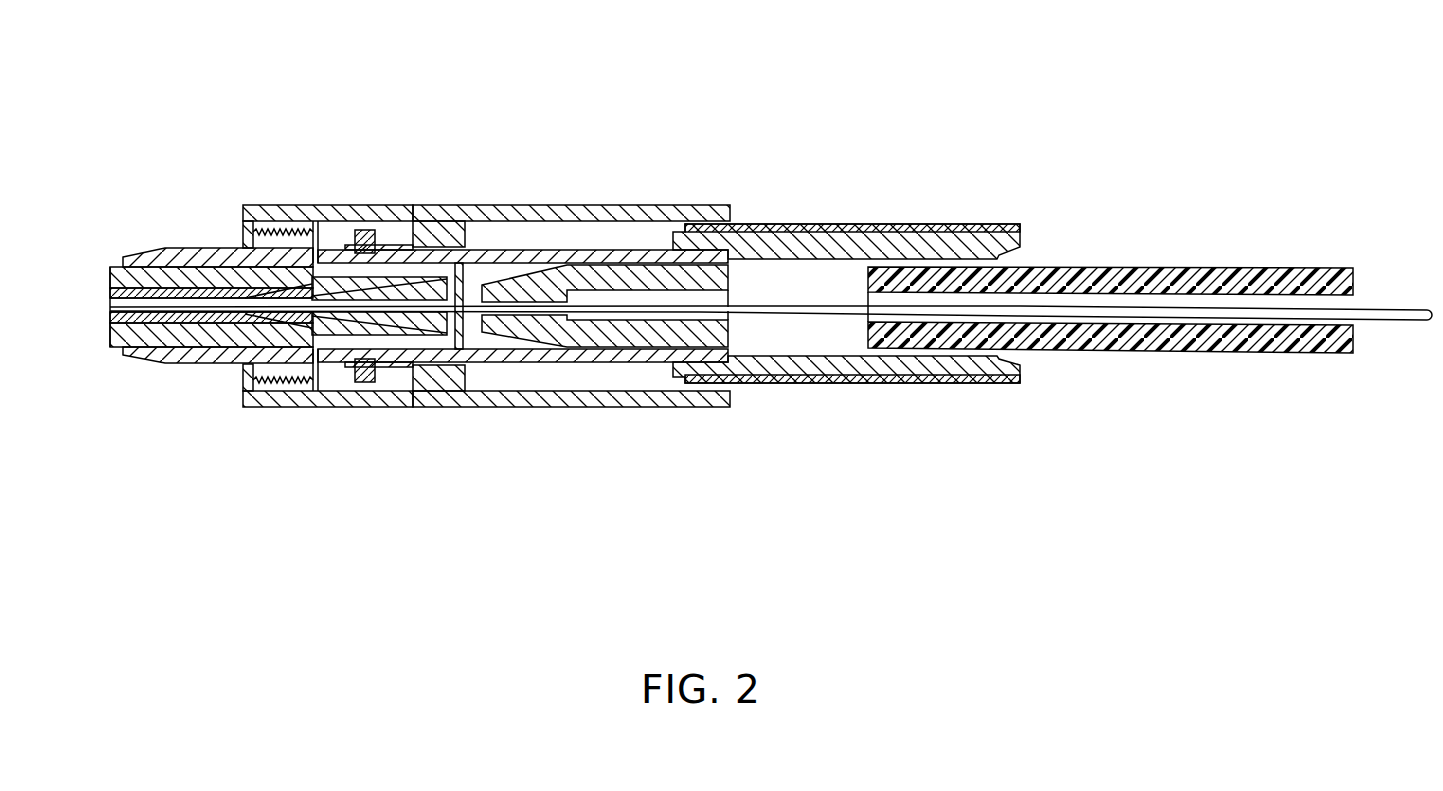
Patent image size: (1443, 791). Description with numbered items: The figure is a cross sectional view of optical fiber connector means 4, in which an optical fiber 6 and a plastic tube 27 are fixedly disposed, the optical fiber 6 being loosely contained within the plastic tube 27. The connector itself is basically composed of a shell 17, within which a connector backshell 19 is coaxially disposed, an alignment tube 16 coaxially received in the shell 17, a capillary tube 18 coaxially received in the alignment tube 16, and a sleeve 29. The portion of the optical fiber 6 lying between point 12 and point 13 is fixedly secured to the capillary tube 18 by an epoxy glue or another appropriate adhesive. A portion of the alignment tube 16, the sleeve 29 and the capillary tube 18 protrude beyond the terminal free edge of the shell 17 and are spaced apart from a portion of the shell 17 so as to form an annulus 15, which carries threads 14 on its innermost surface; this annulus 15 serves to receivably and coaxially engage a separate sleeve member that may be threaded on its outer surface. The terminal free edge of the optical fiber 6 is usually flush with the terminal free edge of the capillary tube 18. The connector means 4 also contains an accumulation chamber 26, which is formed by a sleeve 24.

The optical fiber connector means 4 is at (786, 112).
The optical fiber 6 is at (1400, 310).
The point 12 is at (108, 290).
The point 13 is at (222, 326).
The threads 14 is at (243, 384).
The annulus 15 is at (313, 205).
The alignment tube 16 is at (216, 248).
The shell 17 is at (615, 205).
The capillary tube 18 is at (110, 318).
The connector backshell 19 is at (903, 224).
The sleeve 24 is at (728, 343).
The accumulation chamber 26 is at (683, 299).
The plastic tube 27 is at (1263, 267).
The sleeve 29 is at (110, 348).